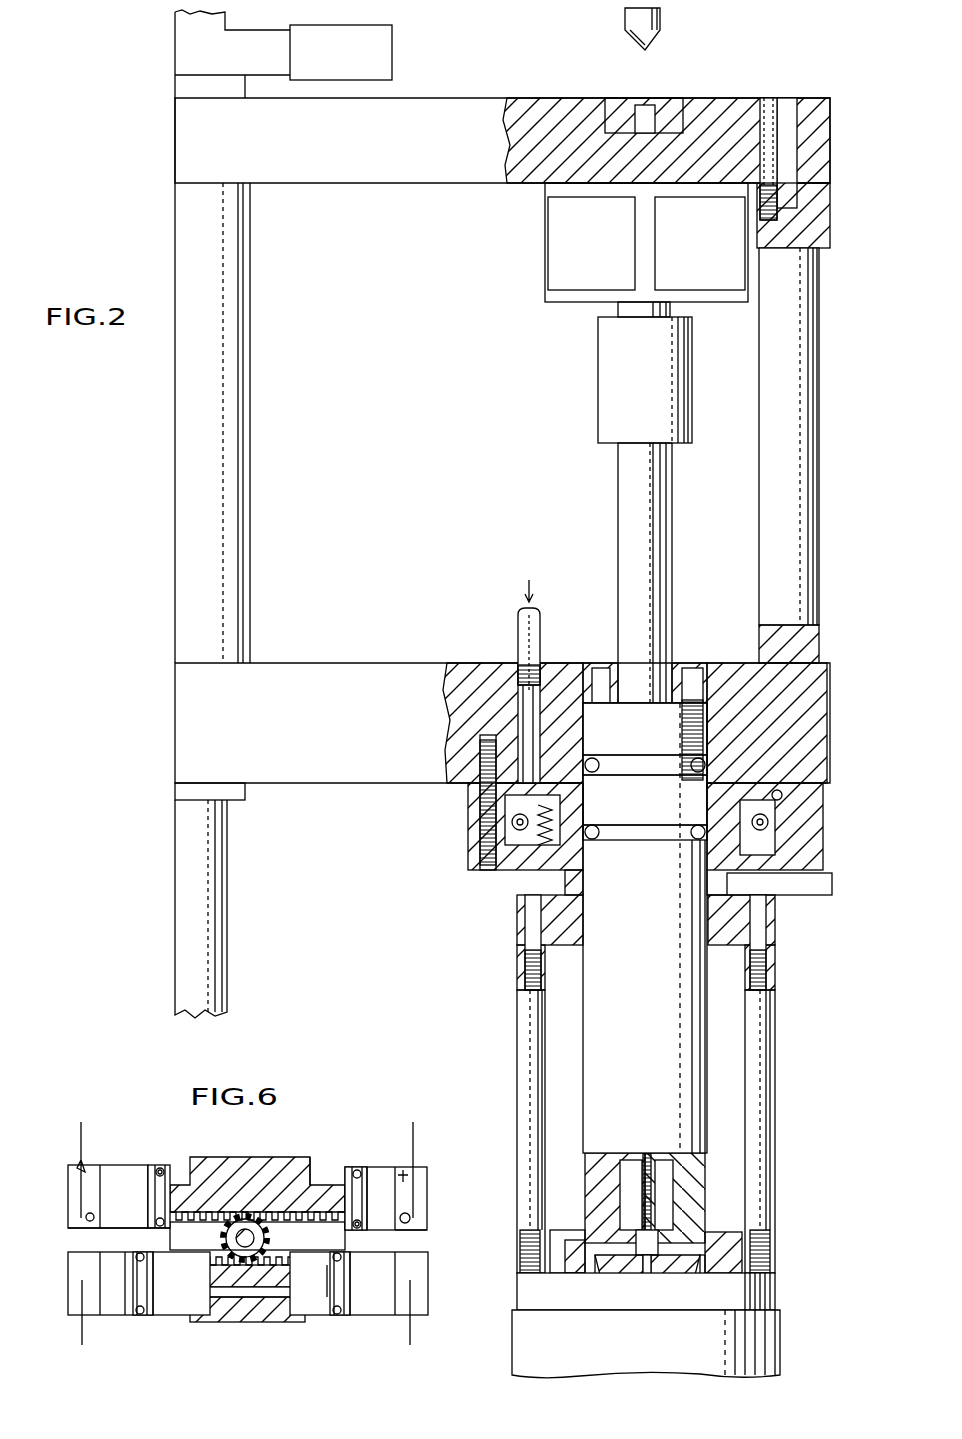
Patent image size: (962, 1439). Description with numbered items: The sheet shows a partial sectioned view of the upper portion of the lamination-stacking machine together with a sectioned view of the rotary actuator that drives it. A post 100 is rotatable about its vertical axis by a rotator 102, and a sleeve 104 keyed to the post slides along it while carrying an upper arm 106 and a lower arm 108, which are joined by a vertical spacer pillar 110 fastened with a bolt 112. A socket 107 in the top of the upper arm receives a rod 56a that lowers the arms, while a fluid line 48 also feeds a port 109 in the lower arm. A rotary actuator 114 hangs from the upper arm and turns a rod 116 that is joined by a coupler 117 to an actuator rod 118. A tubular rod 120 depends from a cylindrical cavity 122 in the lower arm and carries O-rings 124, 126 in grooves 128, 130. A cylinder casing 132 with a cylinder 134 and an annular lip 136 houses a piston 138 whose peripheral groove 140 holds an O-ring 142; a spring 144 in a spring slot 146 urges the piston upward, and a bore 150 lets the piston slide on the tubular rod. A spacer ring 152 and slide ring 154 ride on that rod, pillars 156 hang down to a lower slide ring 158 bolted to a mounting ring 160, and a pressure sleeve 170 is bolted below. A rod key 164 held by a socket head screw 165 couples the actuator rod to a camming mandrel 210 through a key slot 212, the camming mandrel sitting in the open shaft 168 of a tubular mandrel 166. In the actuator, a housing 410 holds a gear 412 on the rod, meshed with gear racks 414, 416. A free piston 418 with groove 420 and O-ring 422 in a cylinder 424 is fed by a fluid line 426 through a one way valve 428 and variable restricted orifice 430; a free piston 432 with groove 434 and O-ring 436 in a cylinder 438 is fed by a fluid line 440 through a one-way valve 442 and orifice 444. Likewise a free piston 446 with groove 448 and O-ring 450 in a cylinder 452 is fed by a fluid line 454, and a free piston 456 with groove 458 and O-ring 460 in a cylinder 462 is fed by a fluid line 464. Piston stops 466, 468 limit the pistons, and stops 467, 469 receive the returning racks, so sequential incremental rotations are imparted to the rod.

In FIG. 2, the rod 56a is at (660, 22).
In FIG. 2, the post 100 is at (186, 88).
In FIG. 2, the rotator 102 is at (341, 52).
In FIG. 2, the sleeve 104 is at (250, 368).
In FIG. 2, the upper arm 106 is at (830, 122).
In FIG. 2, the socket 107 is at (655, 100).
In FIG. 2, the lower arm 108 is at (828, 692).
In FIG. 2, the port 109 is at (533, 720).
In FIG. 2, the vertical spacer pillar 110 is at (820, 292).
In FIG. 2, the bolt 112 is at (768, 100).
In FIG. 2, the rotary actuator 114 is at (545, 292).
In FIG. 2, the rod 116 is at (668, 312).
In FIG. 6, the rod 116 is at (285, 1245).
In FIG. 2, the coupler 117 is at (600, 400).
In FIG. 2, the actuator rod 118 is at (665, 470).
In FIG. 2, the tubular rod 120 is at (712, 745).
In FIG. 2, the cylindrical cavity 122 is at (705, 720).
In FIG. 2, the O-ring 124 is at (705, 765).
In FIG. 2, the O-ring 126 is at (700, 840).
In FIG. 2, the groove 128 is at (643, 758).
In FIG. 2, the groove 130 is at (648, 828).
In FIG. 2, the cylinder casing 132 is at (823, 830).
In FIG. 2, the cylinder 134 is at (782, 795).
In FIG. 2, the annular lip 136 is at (565, 880).
In FIG. 2, the piston 138 is at (470, 803).
In FIG. 2, the peripheral groove 140 is at (535, 840).
In FIG. 2, the O-ring 142 is at (512, 820).
In FIG. 2, the spring 144 is at (545, 770).
In FIG. 2, the spring slot 146 is at (592, 826).
In FIG. 2, the bore 150 is at (790, 880).
In FIG. 2, the spacer ring 152 is at (775, 893).
In FIG. 2, the slide ring 154 is at (775, 935).
In FIG. 2, the pillars 156 is at (775, 1040).
In FIG. 2, the lower slide ring 158 is at (842, 1301).
In FIG. 2, the mounting ring 160 is at (725, 1232).
In FIG. 2, the rod key 164 is at (638, 1237).
In FIG. 2, the socket head screw 165 is at (655, 1295).
In FIG. 2, the tubular mandrel 166 is at (605, 1275).
In FIG. 2, the open shaft 168 is at (670, 1293).
In FIG. 2, the pressure sleeve 170 is at (780, 1345).
In FIG. 2, the camming mandrel 210 is at (690, 1275).
In FIG. 2, the key slot 212 is at (605, 1292).
In FIG. 2, the fluid line 48 is at (520, 636).
In FIG. 6, the housing 410 is at (390, 1160).
In FIG. 6, the gear 412 is at (238, 1262).
In FIG. 6, the gear rack 414 is at (240, 1160).
In FIG. 6, the gear rack 416 is at (280, 1285).
In FIG. 6, the free piston 418 is at (362, 1170).
In FIG. 6, the peripheral groove 420 is at (355, 1205).
In FIG. 6, the O-ring 422 is at (360, 1230).
In FIG. 6, the cylinder 424 is at (400, 1220).
In FIG. 6, the fluid line 426 is at (413, 1140).
In FIG. 6, the one way valve 428 is at (410, 1218).
In FIG. 6, the variable restricted orifice 430 is at (410, 1178).
In FIG. 6, the free piston 432 is at (148, 1195).
In FIG. 6, the peripheral groove 434 is at (154, 1198).
In FIG. 6, the O-ring 436 is at (160, 1168).
In FIG. 6, the cylinder 438 is at (110, 1240).
In FIG. 6, the fluid line 440 is at (81, 1140).
In FIG. 6, the one-way valve 442 is at (88, 1220).
In FIG. 6, the variable restricted orifice 444 is at (90, 1170).
In FIG. 6, the free piston 446 is at (352, 1300).
In FIG. 6, the peripheral groove 448 is at (345, 1270).
In FIG. 6, the O-ring 450 is at (340, 1315).
In FIG. 6, the cylinder 452 is at (390, 1300).
In FIG. 6, the fluid line 454 is at (413, 1338).
In FIG. 6, the free piston 456 is at (127, 1300).
In FIG. 6, the peripheral groove 458 is at (140, 1272).
In FIG. 6, the O-ring 460 is at (140, 1315).
In FIG. 6, the cylinder 462 is at (110, 1300).
In FIG. 6, the fluid line 464 is at (82, 1333).
In FIG. 6, the piston stop 466 is at (312, 1168).
In FIG. 6, the stop 467 is at (165, 1170).
In FIG. 6, the piston stop 468 is at (172, 1305).
In FIG. 6, the stop 469 is at (330, 1300).